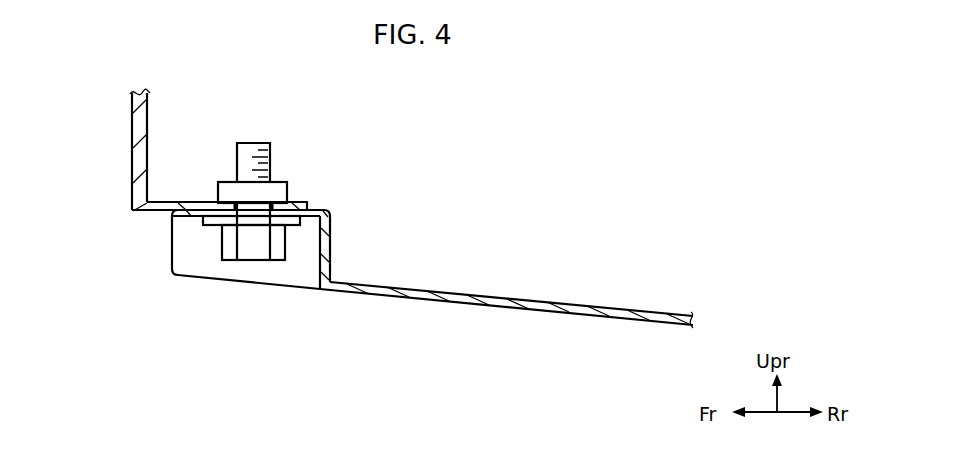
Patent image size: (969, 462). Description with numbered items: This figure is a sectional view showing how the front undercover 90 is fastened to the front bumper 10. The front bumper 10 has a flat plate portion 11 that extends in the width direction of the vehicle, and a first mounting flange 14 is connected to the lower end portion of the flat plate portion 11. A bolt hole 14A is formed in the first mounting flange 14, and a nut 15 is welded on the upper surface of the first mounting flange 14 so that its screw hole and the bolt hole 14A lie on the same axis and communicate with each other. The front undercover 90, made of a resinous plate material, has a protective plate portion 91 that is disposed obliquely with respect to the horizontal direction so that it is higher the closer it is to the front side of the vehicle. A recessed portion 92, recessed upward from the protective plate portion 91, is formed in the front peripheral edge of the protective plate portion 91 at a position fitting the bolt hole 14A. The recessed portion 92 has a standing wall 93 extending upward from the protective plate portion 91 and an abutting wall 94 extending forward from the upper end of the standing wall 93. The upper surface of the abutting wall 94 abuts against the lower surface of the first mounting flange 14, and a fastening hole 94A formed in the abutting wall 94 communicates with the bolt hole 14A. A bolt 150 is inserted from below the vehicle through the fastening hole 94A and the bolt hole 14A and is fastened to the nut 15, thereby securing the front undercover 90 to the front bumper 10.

The front bumper 10 is at (102, 99).
The flat plate portion 11 is at (132, 161).
The first mounting flange 14 is at (192, 206).
The bolt hole 14A is at (235, 217).
The nut 15 is at (287, 184).
The front undercover 90 is at (377, 338).
The protective plate portion 91 is at (500, 309).
The recessed portion 92 is at (184, 259).
The standing wall 93 is at (334, 254).
The abutting wall 94 is at (318, 212).
The fastening hole 94A is at (232, 222).
The bolt 150 is at (246, 262).